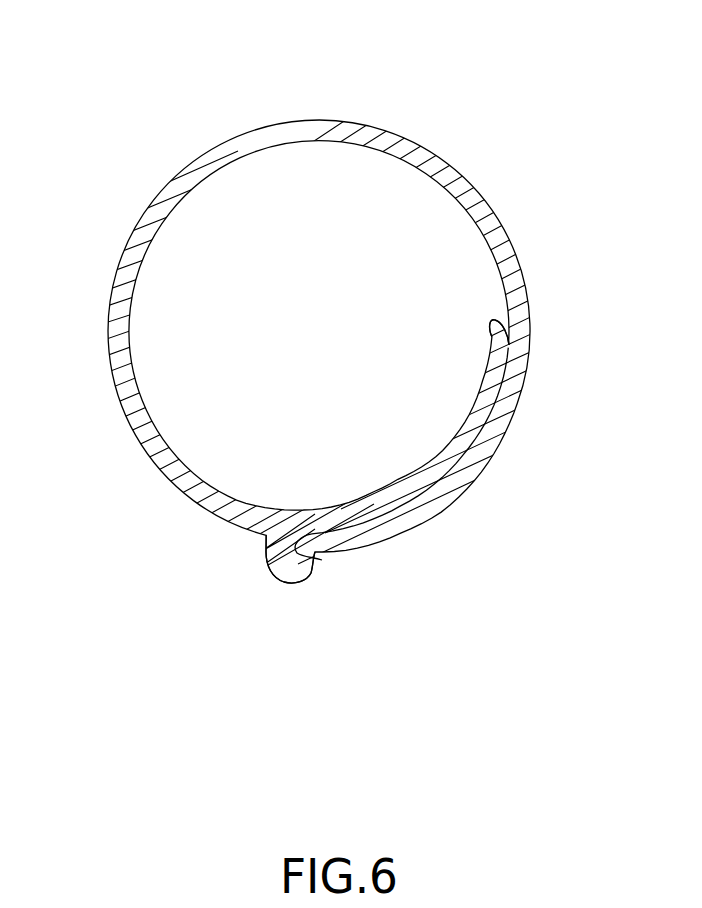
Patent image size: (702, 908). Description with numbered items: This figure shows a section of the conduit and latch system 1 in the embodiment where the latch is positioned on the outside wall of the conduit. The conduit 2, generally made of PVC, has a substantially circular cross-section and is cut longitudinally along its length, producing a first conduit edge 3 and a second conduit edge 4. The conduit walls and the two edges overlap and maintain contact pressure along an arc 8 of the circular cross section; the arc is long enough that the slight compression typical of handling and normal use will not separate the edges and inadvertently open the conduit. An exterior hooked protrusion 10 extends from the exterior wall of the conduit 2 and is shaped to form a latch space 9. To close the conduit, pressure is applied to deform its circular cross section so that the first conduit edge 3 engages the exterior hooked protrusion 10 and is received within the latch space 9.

The conduit and latch system 1 is at (557, 55).
The conduit 2 is at (108, 222).
The first conduit edge 3 is at (316, 530).
The second conduit edge 4 is at (493, 330).
The arc 8 is at (468, 472).
The latch space 9 is at (314, 557).
The exterior hooked protrusion 10 is at (296, 567).